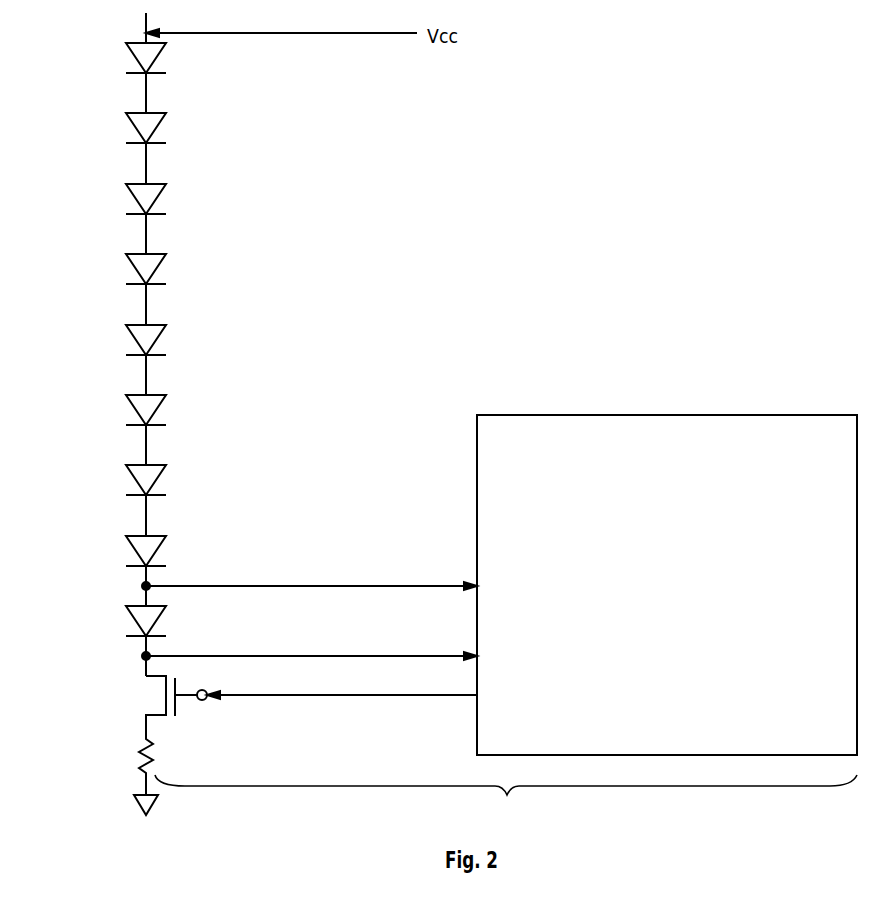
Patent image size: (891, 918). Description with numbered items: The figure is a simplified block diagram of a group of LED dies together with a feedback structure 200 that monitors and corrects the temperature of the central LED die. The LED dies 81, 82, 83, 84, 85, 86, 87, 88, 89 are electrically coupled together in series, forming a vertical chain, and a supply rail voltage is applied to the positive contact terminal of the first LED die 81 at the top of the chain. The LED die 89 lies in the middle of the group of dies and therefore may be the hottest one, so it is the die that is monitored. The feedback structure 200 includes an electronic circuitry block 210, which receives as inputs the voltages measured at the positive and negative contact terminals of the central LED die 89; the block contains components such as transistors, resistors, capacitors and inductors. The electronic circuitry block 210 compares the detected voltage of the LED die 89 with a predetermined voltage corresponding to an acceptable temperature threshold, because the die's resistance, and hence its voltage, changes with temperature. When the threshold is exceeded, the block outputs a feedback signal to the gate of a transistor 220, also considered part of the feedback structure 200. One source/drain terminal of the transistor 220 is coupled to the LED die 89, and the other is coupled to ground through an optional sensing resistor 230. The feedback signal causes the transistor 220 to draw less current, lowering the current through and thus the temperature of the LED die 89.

The LED die 81 is at (133, 50).
The LED die 82 is at (133, 120).
The LED die 83 is at (133, 191).
The LED die 84 is at (133, 261).
The LED die 85 is at (133, 332).
The LED die 86 is at (133, 402).
The LED die 87 is at (133, 472).
The LED die 88 is at (133, 543).
The central LED die 89 is at (133, 613).
The feedback structure 200 is at (506, 797).
The electronic circuitry block 210 is at (657, 415).
The transistor 220 is at (178, 710).
The sensing resistor 230 is at (136, 757).